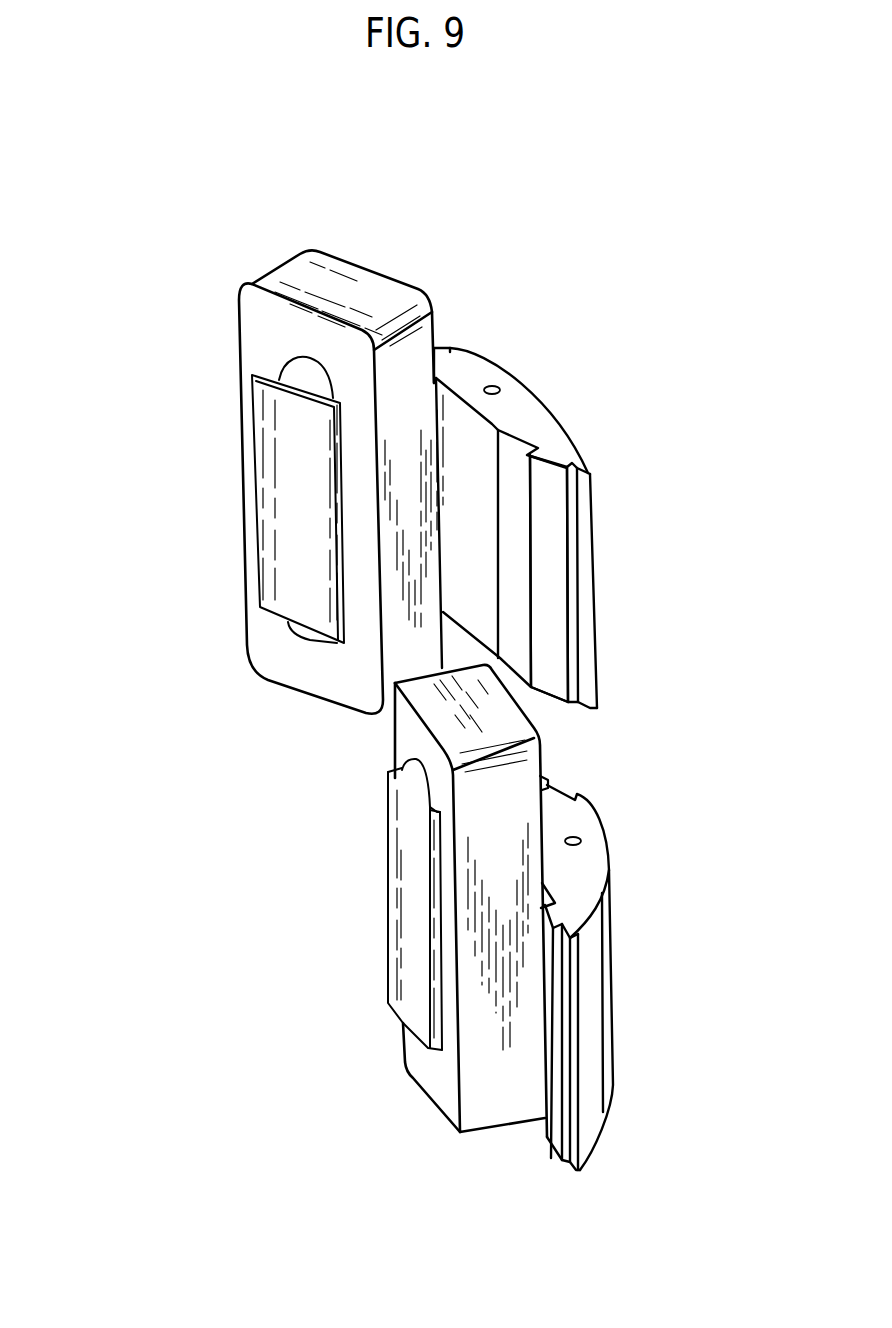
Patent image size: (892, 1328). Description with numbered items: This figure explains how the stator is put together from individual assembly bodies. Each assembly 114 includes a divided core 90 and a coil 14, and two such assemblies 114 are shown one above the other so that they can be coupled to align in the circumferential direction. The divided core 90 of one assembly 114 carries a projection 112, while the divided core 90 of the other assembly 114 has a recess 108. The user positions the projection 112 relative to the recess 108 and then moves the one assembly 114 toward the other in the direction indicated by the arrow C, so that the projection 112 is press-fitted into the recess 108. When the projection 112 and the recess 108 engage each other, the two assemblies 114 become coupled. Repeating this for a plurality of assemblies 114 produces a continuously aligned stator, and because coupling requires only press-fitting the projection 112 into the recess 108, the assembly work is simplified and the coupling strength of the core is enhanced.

The coil 14 is at (280, 270).
The divided core 90 is at (532, 391).
The recess 108 is at (551, 793).
The projection 112 is at (548, 555).
The assembly 114 is at (292, 202).